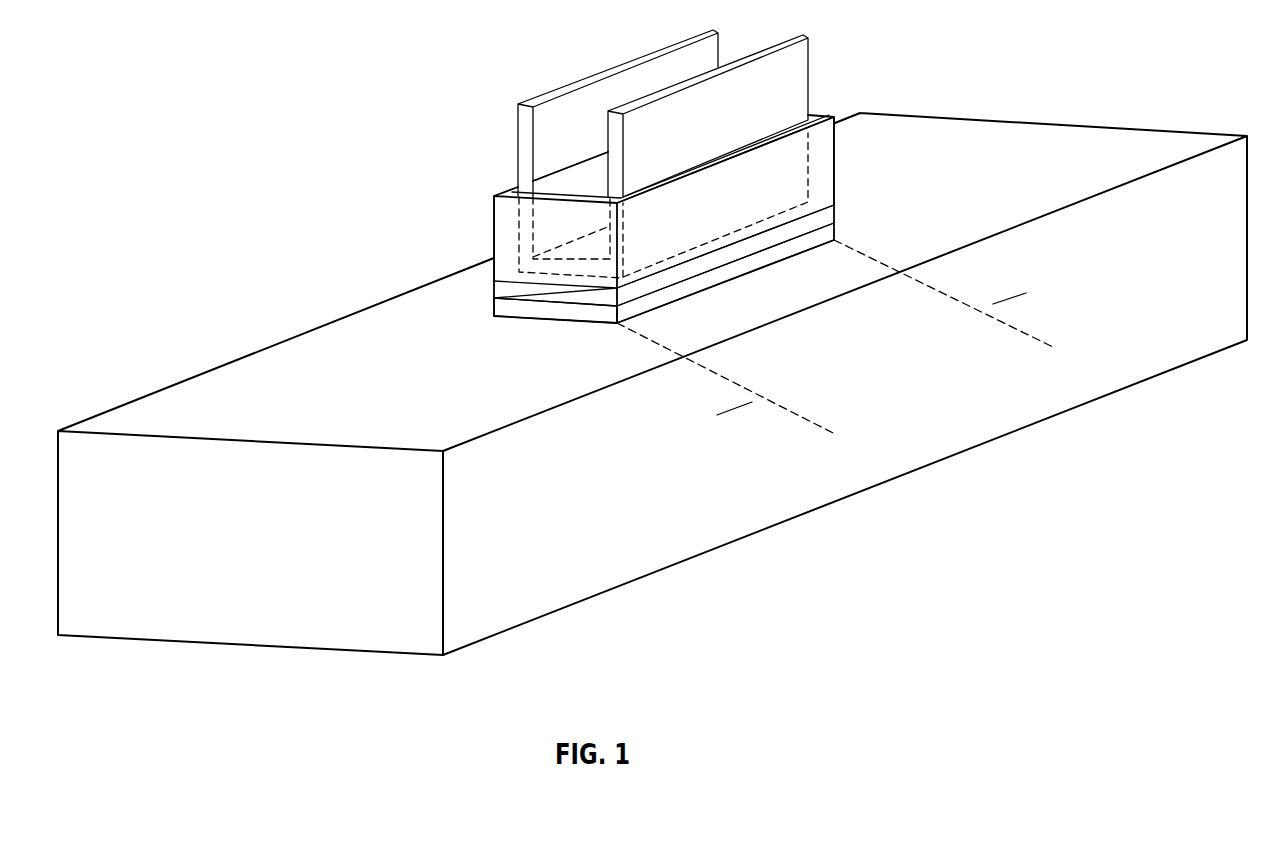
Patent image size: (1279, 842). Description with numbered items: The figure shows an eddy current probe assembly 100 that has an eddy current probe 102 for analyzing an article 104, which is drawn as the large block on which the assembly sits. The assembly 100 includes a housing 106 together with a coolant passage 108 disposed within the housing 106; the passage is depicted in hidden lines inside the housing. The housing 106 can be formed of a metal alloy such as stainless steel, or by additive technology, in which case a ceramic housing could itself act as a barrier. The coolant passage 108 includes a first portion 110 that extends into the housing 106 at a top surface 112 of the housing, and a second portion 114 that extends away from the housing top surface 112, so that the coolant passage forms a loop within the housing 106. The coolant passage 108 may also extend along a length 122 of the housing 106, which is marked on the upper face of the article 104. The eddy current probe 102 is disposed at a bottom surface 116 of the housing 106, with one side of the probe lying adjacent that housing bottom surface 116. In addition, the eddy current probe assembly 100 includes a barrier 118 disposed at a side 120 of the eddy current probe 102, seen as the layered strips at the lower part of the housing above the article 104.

The eddy current probe assembly 100 is at (472, 211).
The eddy current probe 102 is at (598, 297).
The article 104 is at (836, 464).
The housing 106 is at (837, 160).
The coolant passage 108 is at (514, 231).
The first portion 110 is at (808, 75).
The top surface 112 is at (575, 183).
The second portion 114 is at (518, 140).
The bottom surface 116 is at (521, 285).
The barrier 118 is at (823, 233).
The side 120 is at (723, 265).
The length 122 is at (860, 375).